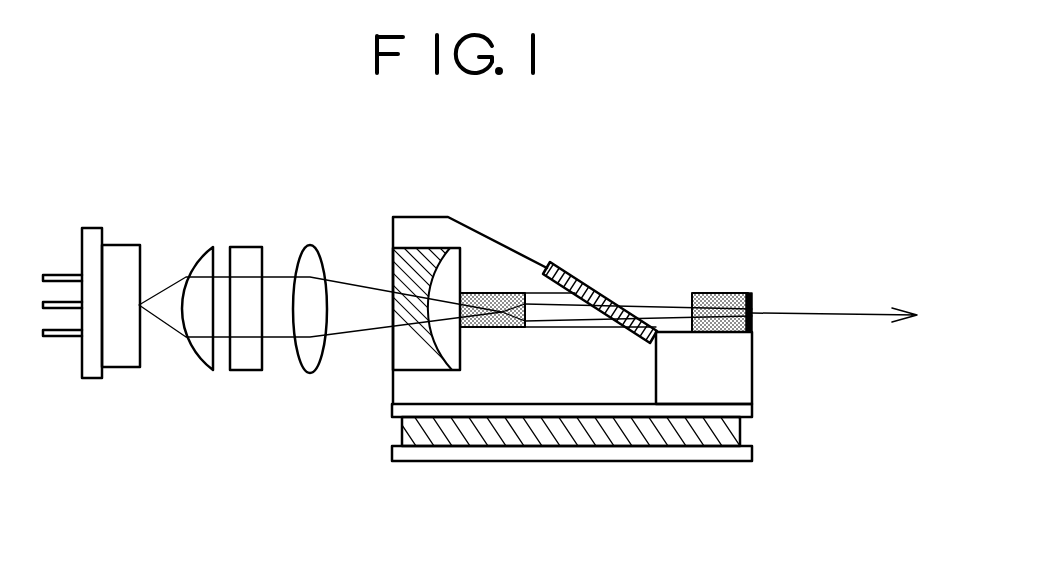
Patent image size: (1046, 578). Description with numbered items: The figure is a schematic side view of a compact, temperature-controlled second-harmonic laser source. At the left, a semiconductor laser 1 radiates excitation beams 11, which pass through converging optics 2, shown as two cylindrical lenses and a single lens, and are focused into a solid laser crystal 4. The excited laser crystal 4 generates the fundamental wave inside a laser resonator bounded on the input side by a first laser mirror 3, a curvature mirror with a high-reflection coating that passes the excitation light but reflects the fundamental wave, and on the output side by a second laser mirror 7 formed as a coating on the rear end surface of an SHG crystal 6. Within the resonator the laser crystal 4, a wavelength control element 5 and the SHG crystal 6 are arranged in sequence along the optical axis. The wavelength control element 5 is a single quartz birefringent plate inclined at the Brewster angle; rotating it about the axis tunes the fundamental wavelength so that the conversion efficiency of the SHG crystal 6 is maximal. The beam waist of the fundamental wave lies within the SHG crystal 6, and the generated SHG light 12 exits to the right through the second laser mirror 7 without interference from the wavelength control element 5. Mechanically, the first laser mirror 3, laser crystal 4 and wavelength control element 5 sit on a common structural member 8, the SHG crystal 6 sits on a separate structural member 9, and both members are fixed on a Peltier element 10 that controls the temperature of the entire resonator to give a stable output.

The semiconductor laser 1 is at (107, 212).
The converging optics 2 is at (333, 229).
The first laser mirror 3 is at (423, 253).
The solid laser crystal 4 is at (513, 292).
The wavelength control element 5 is at (580, 278).
The SHG crystal 6 is at (720, 292).
The second laser mirror 7 is at (750, 292).
The structural member 8 is at (430, 387).
The structural member 9 is at (738, 373).
The Peltier element 10 is at (735, 455).
The excitation beams 11 is at (374, 323).
The SHG light 12 is at (884, 270).